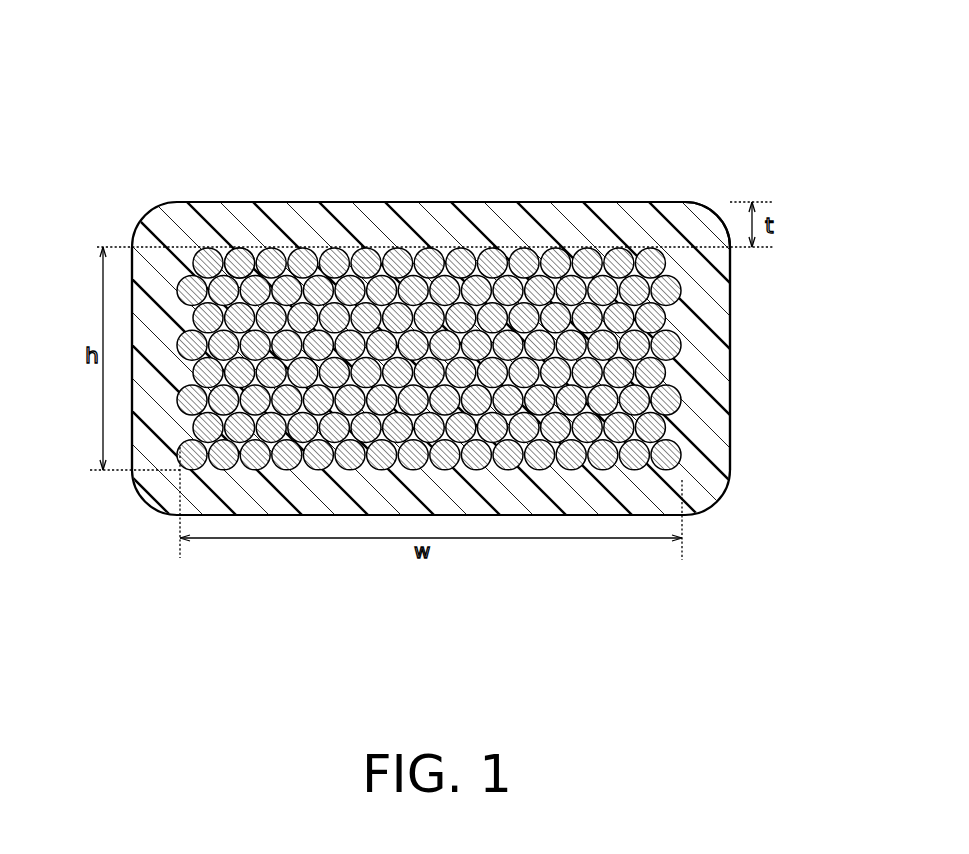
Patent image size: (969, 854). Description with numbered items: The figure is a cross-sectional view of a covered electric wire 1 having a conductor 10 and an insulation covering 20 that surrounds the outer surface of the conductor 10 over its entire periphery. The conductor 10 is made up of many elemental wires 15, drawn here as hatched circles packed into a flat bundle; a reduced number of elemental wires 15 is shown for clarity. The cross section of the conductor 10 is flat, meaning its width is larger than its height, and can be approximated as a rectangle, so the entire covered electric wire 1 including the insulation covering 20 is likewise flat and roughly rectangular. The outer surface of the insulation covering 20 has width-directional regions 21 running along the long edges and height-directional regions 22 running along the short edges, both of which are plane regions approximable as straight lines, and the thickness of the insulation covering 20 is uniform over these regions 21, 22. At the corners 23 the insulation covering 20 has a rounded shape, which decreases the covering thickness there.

The covered electric wire 1 is at (661, 76).
The conductor 10 is at (333, 248).
The elemental wire 15 is at (230, 248).
The insulation covering 20 is at (450, 213).
The width-directional region 21 is at (502, 202).
The height-directional region 22 is at (130, 405).
The corner 23 is at (713, 213).